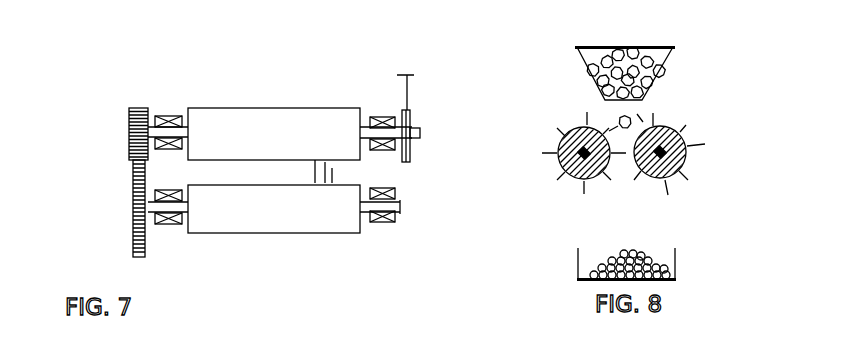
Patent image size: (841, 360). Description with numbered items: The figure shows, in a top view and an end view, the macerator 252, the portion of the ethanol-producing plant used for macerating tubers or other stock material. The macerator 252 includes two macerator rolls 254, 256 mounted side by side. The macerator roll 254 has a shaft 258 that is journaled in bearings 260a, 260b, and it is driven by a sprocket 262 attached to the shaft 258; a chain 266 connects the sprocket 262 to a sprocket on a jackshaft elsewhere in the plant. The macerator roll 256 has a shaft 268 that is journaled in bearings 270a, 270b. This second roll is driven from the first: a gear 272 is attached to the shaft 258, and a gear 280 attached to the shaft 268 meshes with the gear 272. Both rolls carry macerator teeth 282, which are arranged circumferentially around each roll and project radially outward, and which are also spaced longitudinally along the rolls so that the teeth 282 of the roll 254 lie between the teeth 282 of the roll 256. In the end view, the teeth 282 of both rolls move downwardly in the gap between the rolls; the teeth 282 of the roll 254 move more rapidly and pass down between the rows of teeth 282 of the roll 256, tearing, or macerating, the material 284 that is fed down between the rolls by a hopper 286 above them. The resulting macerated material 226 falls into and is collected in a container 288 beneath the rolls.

In FIG. 7, the macerator 252 is at (155, 84).
In FIG. 8, the macerator 252 is at (549, 62).
In FIG. 7, the macerator roll 254 is at (266, 141).
In FIG. 8, the macerator roll 254 is at (673, 122).
In FIG. 7, the macerator roll 256 is at (254, 212).
In FIG. 8, the macerator roll 256 is at (573, 123).
In FIG. 7, the shaft 258 is at (420, 138).
In FIG. 7, the bearing 260a is at (167, 117).
In FIG. 7, the bearing 260b is at (379, 118).
In FIG. 7, the sprocket 262 is at (412, 113).
In FIG. 7, the chain 266 is at (408, 84).
In FIG. 7, the shaft 268 is at (400, 207).
In FIG. 7, the bearing 270a is at (172, 226).
In FIG. 7, the bearing 270b is at (392, 247).
In FIG. 7, the gear 272 is at (130, 128).
In FIG. 7, the gear 280 is at (132, 250).
In FIG. 7, the macerator teeth 282 is at (315, 170).
In FIG. 8, the macerator teeth 282 is at (583, 192).
In FIG. 8, the material 284 is at (627, 47).
In FIG. 8, the hopper 286 is at (663, 62).
In FIG. 8, the container 288 is at (577, 272).
In FIG. 8, the macerated material 226 is at (660, 232).